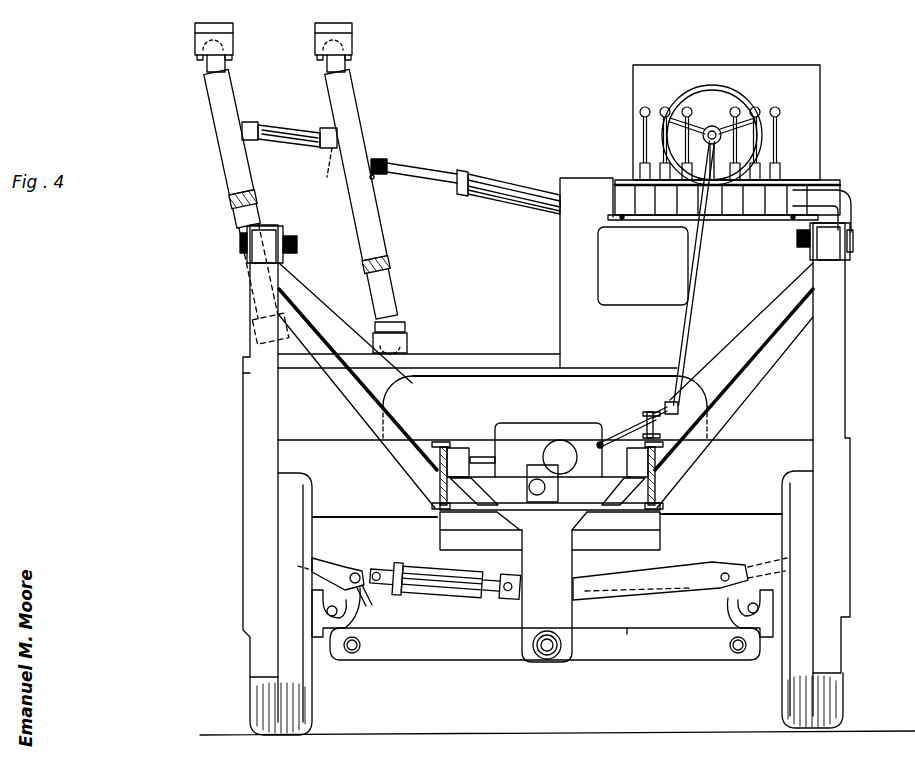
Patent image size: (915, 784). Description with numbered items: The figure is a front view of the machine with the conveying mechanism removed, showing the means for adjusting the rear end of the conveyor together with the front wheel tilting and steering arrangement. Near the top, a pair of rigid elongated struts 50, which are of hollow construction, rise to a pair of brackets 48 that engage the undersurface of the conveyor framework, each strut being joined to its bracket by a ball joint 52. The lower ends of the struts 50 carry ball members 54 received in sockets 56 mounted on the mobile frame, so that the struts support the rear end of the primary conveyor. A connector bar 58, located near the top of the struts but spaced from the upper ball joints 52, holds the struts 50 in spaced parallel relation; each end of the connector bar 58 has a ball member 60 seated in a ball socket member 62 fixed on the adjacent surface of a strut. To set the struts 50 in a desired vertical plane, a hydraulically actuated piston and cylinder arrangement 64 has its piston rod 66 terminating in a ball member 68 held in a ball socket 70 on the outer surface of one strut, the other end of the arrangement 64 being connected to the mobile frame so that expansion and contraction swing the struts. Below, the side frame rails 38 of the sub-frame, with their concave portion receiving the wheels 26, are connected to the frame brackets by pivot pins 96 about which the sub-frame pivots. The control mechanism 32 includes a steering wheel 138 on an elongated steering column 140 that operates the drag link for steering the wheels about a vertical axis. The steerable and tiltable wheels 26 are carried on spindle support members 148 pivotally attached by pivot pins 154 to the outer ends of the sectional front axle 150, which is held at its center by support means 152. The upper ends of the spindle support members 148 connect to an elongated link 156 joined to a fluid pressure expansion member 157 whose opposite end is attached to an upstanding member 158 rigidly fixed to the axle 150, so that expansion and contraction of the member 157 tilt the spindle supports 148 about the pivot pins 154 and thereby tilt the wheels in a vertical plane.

The steerable and tiltable wheels 26 is at (272, 692).
The control mechanism 32 is at (790, 158).
The side frame rails 38 is at (262, 388).
The brackets 48 is at (352, 42).
The rigid elongated struts 50 is at (225, 118).
The ball joint 52 is at (195, 42).
The ball members 54 is at (404, 328).
The sockets 56 is at (410, 347).
The connector bar 58 is at (298, 136).
The ball member 60 is at (323, 172).
The ball socket members 62 is at (252, 135).
The hydraulically actuated piston and cylinder arrangement 64 is at (479, 162).
The piston rod 66 is at (428, 177).
The ball member 68 is at (388, 160).
The ball socket 70 is at (374, 178).
The pivot pin 96 is at (243, 245).
The steering wheel 138 is at (708, 86).
The steering column 140 is at (692, 271).
The spindle support members 148 is at (316, 643).
The front axle 150 is at (662, 643).
The support means 152 is at (538, 607).
The pivot pins 154 is at (355, 652).
The elongated link 156 is at (702, 577).
The fluid pressure expansion member 157 is at (448, 588).
The upstanding member 158 is at (364, 588).